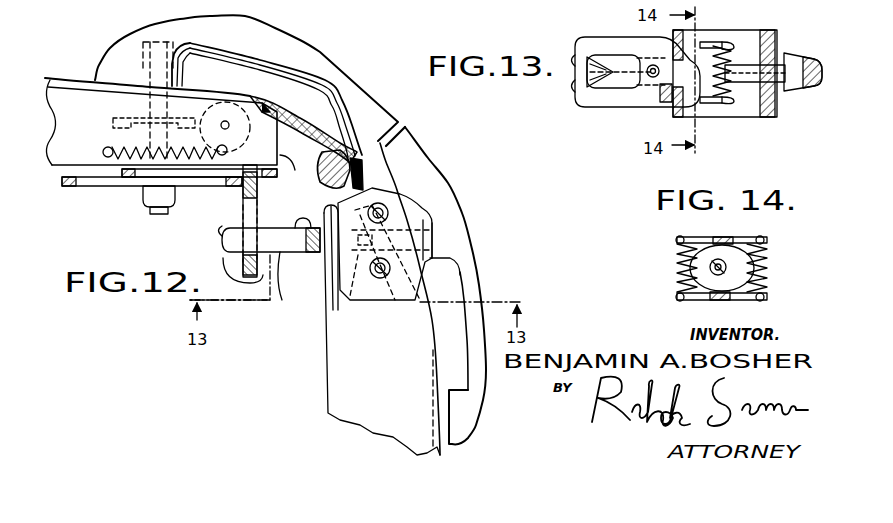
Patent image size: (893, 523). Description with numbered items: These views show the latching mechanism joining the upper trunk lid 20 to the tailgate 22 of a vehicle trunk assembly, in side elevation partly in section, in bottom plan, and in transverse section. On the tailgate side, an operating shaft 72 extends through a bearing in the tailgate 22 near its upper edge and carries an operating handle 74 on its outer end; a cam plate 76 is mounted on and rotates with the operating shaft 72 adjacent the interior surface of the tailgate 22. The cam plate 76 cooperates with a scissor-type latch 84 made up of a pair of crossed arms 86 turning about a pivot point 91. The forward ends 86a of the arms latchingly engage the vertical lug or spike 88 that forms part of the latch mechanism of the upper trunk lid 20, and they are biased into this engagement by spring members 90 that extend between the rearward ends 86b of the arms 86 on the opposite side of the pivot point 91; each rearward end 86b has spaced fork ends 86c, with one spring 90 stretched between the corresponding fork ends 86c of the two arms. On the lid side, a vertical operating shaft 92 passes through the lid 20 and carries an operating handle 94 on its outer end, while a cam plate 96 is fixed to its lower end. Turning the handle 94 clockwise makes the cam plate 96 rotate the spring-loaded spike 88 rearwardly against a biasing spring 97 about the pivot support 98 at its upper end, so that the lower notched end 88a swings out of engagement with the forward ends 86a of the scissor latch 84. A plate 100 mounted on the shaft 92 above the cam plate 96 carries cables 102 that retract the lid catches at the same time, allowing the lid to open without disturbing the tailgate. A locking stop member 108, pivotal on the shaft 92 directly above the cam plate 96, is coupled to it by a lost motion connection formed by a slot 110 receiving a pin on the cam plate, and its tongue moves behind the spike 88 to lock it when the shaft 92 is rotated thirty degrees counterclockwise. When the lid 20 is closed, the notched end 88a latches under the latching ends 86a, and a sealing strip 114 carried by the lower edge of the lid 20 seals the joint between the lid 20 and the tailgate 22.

In FIG. 12, the upper trunk lid 20 is at (234, 96).
In FIG. 12, the tailgate 22 is at (436, 292).
In FIG. 13, the tailgate 22 is at (773, 48).
In FIG. 12, the operating shaft 72 is at (388, 261).
In FIG. 13, the operating shaft 72 is at (762, 80).
In FIG. 12, the operating handle 74 is at (471, 237).
In FIG. 13, the operating handle 74 is at (812, 92).
In FIG. 12, the cam plate 76 is at (336, 312).
In FIG. 13, the cam plate 76 is at (679, 98).
In FIG. 14, the cam plate 76 is at (760, 285).
In FIG. 12, the scissor-type latch 84 is at (273, 227).
In FIG. 13, the scissor-type latch 84 is at (627, 37).
In FIG. 12, the crossed arms 86 is at (244, 279).
In FIG. 13, the crossed arms 86 is at (630, 73).
In FIG. 12, the forward ends 86a is at (222, 238).
In FIG. 13, the forward ends 86a is at (580, 58).
In FIG. 13, the rearward ends 86b is at (702, 42).
In FIG. 14, the rearward ends 86b is at (723, 237).
In FIG. 12, the fork ends 86c is at (345, 304).
In FIG. 13, the fork ends 86c is at (733, 47).
In FIG. 14, the fork ends 86c is at (680, 237).
In FIG. 12, the vertical lug or spike 88 is at (246, 201).
In FIG. 12, the lower notched end 88a is at (233, 263).
In FIG. 13, the lower notched end 88a is at (584, 74).
In FIG. 12, the spring members 90 is at (385, 205).
In FIG. 13, the spring members 90 is at (728, 62).
In FIG. 14, the spring members 90 is at (677, 267).
In FIG. 12, the pivot point 91 is at (304, 222).
In FIG. 13, the pivot point 91 is at (651, 77).
In FIG. 12, the operating shaft 92 is at (140, 73).
In FIG. 12, the operating handle 94 is at (303, 55).
In FIG. 12, the cam plate 96 is at (80, 184).
In FIG. 12, the biasing spring 97 is at (107, 185).
In FIG. 12, the pivot support 98 is at (222, 124).
In FIG. 12, the plate 100 is at (115, 124).
In FIG. 12, the cables 102 is at (150, 112).
In FIG. 12, the locking stop member 108 is at (298, 156).
In FIG. 12, the slot 110 is at (200, 188).
In FIG. 12, the sealing strip 114 is at (330, 176).